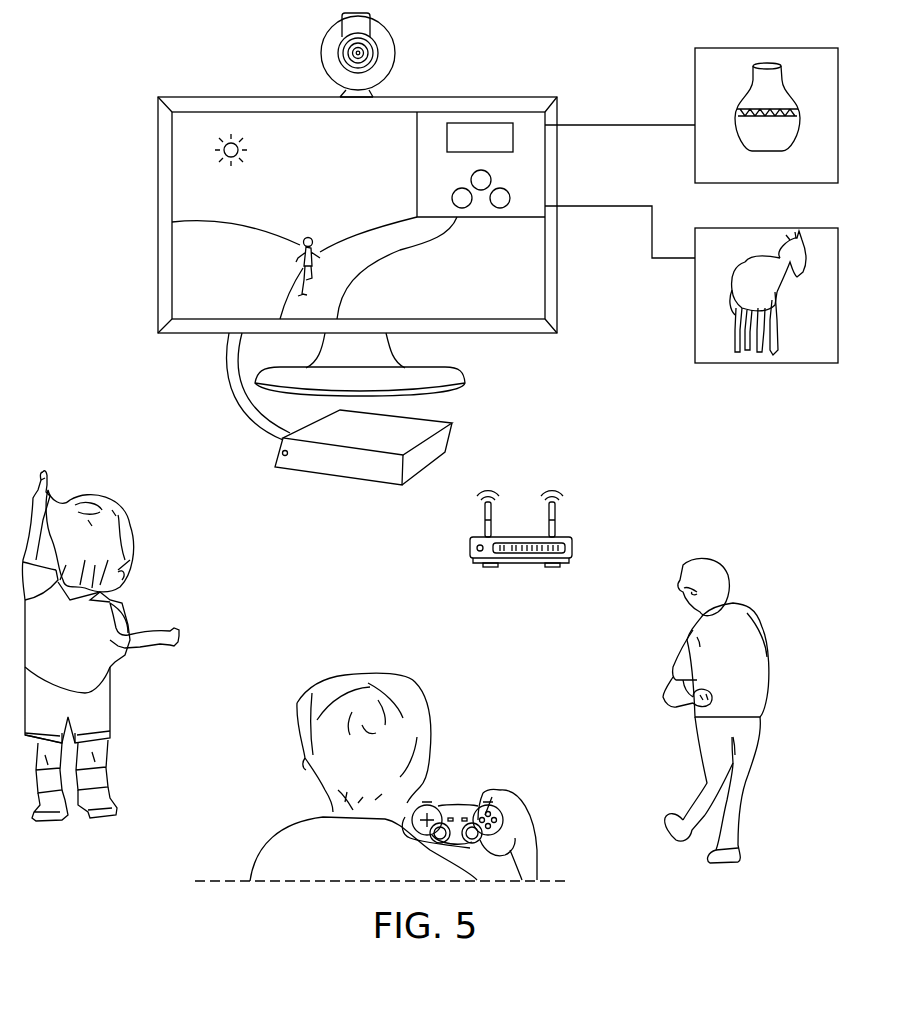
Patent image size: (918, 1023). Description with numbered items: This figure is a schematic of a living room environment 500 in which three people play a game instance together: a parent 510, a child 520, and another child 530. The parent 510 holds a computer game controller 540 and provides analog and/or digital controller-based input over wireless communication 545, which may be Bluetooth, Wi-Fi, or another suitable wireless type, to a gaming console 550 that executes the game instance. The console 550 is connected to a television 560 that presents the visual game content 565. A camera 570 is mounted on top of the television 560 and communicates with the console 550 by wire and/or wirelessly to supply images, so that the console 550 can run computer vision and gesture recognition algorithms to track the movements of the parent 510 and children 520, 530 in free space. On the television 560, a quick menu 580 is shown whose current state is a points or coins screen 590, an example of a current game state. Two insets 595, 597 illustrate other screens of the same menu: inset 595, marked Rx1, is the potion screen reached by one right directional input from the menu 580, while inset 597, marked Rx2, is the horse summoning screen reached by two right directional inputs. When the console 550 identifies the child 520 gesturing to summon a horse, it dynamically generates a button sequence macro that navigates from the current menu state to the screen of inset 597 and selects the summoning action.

The living room environment 500 is at (132, 46).
The parent 510 is at (272, 845).
The child 520 is at (110, 665).
The child 530 is at (770, 664).
The computer game controller 540 is at (467, 803).
The wireless communication 545 is at (572, 549).
The gaming console 550 is at (452, 426).
The television 560 is at (158, 218).
The visual game content 565 is at (512, 300).
The camera 570 is at (376, 18).
The quick menu 580 is at (480, 122).
The points or coins screen 590 is at (510, 157).
The inset 595 is at (695, 116).
The inset 597 is at (695, 296).